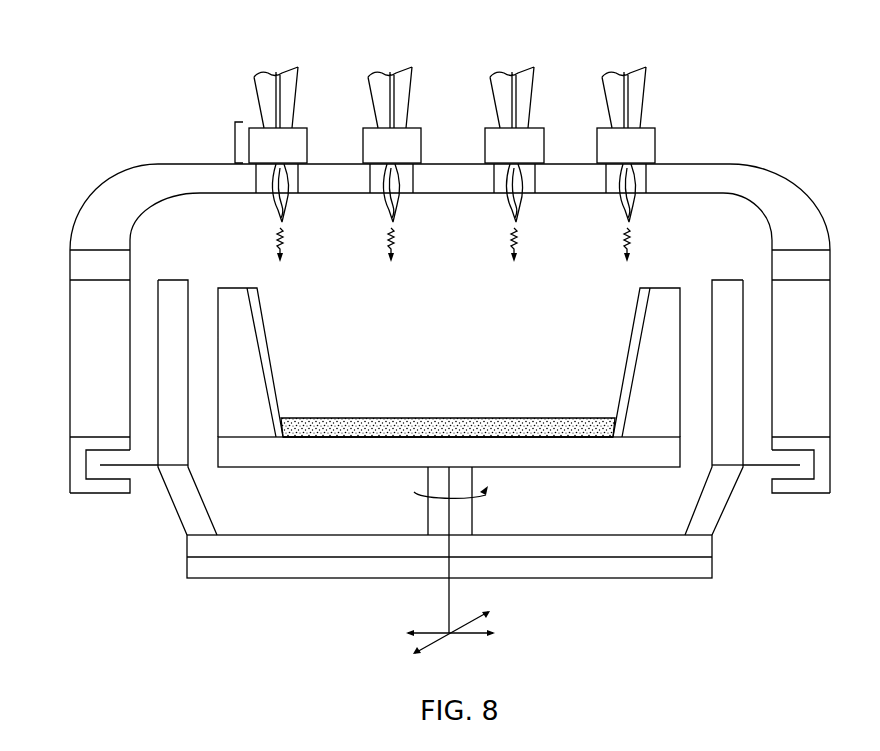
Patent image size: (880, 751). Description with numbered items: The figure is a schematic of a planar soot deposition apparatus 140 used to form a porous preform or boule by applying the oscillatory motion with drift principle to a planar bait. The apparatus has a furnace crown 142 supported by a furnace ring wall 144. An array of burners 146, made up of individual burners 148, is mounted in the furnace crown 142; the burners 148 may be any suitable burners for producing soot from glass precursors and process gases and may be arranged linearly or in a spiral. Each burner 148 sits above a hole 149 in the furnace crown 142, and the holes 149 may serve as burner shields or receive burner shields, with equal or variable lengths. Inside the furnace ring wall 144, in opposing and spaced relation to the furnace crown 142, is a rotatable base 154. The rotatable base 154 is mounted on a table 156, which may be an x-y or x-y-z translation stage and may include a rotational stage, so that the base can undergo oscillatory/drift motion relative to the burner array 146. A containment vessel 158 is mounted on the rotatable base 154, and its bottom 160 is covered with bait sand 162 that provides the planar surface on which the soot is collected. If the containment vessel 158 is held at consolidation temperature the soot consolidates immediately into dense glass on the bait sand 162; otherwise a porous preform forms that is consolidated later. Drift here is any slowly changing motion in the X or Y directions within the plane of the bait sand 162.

The planar soot deposition apparatus 140 is at (467, 58).
The furnace crown 142 is at (141, 170).
The furnace ring wall 144 is at (70, 340).
The array of burners 146 is at (235, 140).
The burners 148 is at (298, 143).
The holes 149 is at (262, 182).
The rotatable base 154 is at (336, 455).
The table 156 is at (622, 580).
The containment vessel 158 is at (664, 289).
The bottom 160 is at (538, 440).
The bait sand 162 is at (558, 424).